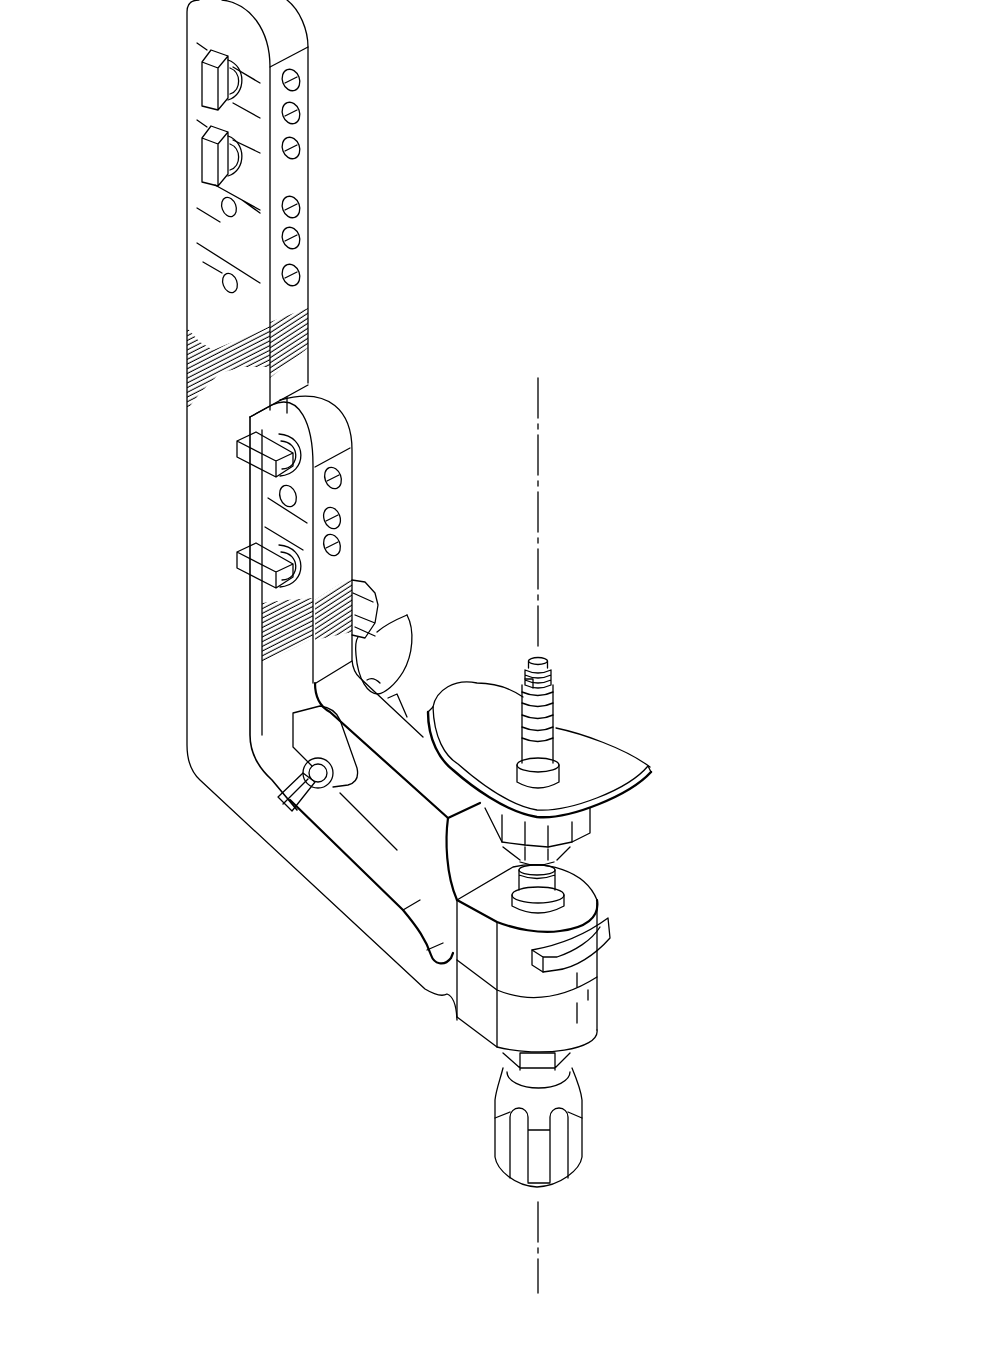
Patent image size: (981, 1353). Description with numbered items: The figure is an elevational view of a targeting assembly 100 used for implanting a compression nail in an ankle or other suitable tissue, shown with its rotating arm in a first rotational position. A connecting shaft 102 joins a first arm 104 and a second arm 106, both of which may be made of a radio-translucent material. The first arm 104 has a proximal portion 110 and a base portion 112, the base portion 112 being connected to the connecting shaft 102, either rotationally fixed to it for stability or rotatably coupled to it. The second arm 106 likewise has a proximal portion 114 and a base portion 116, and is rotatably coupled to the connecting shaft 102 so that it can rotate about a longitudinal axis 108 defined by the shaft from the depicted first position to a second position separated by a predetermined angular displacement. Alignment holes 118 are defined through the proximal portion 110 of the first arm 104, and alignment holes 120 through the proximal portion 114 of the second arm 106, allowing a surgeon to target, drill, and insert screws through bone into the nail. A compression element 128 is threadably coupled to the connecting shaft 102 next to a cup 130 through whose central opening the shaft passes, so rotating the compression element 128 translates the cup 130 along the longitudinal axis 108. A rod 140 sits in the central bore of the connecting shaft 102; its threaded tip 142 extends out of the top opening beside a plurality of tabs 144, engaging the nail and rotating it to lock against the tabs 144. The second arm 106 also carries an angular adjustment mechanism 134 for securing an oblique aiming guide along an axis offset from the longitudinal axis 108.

The targeting assembly 100 is at (633, 93).
The connecting shaft 102 is at (549, 704).
The first arm 104 is at (203, 292).
The second arm 106 is at (345, 463).
The longitudinal axis 108 is at (542, 499).
The proximal portion 110 is at (183, 188).
The base portion 112 is at (603, 1011).
The proximal portion 114 is at (341, 408).
The base portion 116 is at (603, 899).
The alignment hole 118 is at (305, 118).
The alignment hole 120 is at (347, 524).
The compression element 128 is at (582, 838).
The cup 130 is at (600, 762).
The angular adjustment mechanism 134 is at (407, 615).
The rod 140 is at (580, 1140).
The tip 142 is at (546, 665).
The tabs 144 is at (525, 686).